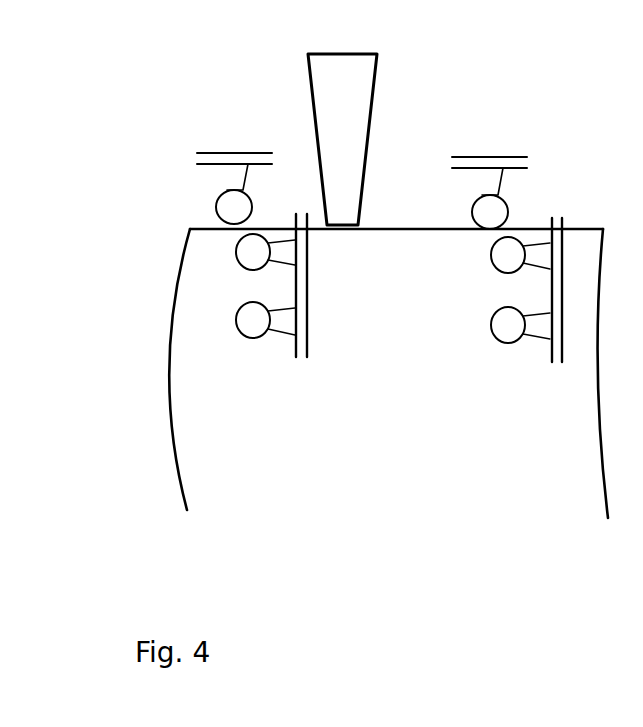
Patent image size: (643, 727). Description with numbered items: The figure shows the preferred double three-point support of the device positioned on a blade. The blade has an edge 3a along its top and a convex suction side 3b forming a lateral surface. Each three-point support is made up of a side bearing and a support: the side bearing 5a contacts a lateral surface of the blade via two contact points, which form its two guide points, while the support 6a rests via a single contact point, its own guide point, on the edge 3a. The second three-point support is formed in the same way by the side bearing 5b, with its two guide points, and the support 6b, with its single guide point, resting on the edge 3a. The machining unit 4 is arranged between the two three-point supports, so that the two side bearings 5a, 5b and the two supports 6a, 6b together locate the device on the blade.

The edge of the blade 3a is at (398, 228).
The convex suction side 3b is at (222, 377).
The machining unit 4 is at (343, 82).
The side bearing 5a is at (295, 290).
The side bearing 5b is at (557, 298).
The support 6a is at (230, 158).
The support 6b is at (482, 165).